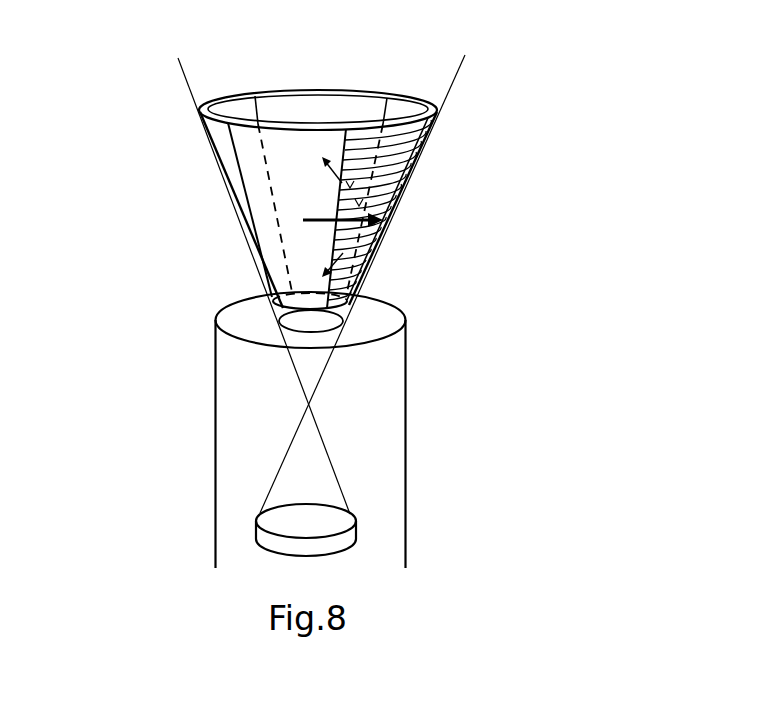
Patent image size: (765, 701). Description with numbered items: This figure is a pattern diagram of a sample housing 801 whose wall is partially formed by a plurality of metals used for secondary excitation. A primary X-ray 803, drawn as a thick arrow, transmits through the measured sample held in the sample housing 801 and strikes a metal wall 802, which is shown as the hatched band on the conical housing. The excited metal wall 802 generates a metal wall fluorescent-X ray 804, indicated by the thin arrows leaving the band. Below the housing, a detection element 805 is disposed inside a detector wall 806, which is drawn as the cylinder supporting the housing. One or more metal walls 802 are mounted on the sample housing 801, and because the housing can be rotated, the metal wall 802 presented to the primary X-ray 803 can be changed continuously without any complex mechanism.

The sample housing 801 is at (197, 112).
The metal wall 802 is at (433, 128).
The primary X-ray 803 is at (303, 222).
The metal wall fluorescent-X ray 804 is at (380, 253).
The detection element 805 is at (328, 520).
The detector wall 806 is at (372, 417).